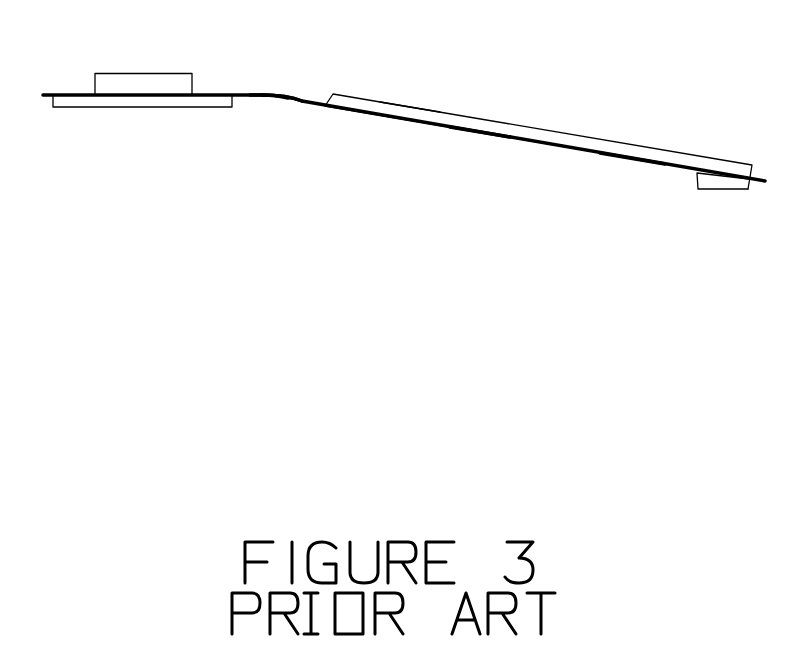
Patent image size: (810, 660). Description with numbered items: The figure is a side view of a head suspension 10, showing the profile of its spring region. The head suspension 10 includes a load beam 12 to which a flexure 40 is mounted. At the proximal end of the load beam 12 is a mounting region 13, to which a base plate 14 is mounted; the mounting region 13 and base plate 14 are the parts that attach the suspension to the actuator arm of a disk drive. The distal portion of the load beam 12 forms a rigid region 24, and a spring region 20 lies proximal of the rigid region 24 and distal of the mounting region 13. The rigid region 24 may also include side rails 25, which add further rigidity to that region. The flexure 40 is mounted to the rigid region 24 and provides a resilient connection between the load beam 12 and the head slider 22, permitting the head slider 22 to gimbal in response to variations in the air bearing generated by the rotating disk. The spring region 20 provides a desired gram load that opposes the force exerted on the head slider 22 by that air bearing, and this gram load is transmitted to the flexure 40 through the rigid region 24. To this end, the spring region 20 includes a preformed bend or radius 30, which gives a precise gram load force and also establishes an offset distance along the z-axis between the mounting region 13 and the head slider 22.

The head suspension 10 is at (590, 134).
The load beam 12 is at (363, 115).
The mounting region 13 is at (181, 97).
The base plate 14 is at (84, 107).
The spring region 20 is at (262, 95).
The head slider 22 is at (720, 189).
The rigid region 24 is at (478, 133).
The side rails 25 is at (407, 107).
The preformed bend or radius 30 is at (272, 96).
The flexure 40 is at (632, 160).